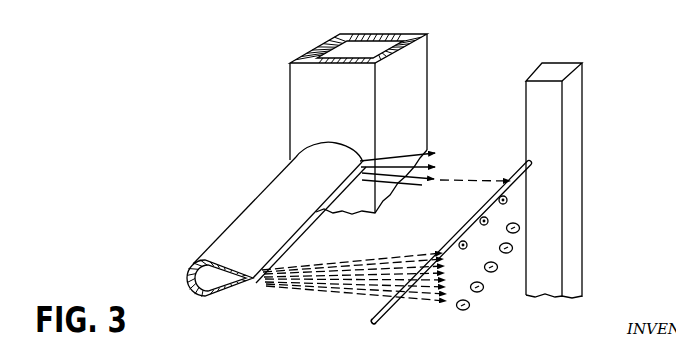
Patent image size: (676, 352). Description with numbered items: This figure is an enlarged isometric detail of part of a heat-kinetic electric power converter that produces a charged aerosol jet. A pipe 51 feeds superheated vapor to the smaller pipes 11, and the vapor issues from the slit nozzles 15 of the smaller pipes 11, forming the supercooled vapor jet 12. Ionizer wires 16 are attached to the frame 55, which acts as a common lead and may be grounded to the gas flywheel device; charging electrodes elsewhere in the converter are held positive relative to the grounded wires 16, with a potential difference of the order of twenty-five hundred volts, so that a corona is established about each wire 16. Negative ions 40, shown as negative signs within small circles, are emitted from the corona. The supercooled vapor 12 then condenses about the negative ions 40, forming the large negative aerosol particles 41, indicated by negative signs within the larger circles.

The smaller pipes 11 is at (276, 229).
The supercooled vapor jet 12 is at (308, 283).
The slit nozzles 15 is at (253, 282).
The ionizer wires 16 is at (378, 316).
The negative ions 40 is at (468, 222).
The large negative aerosol particles 41 is at (468, 311).
The pipe 51 is at (413, 90).
The frame 55 is at (571, 113).